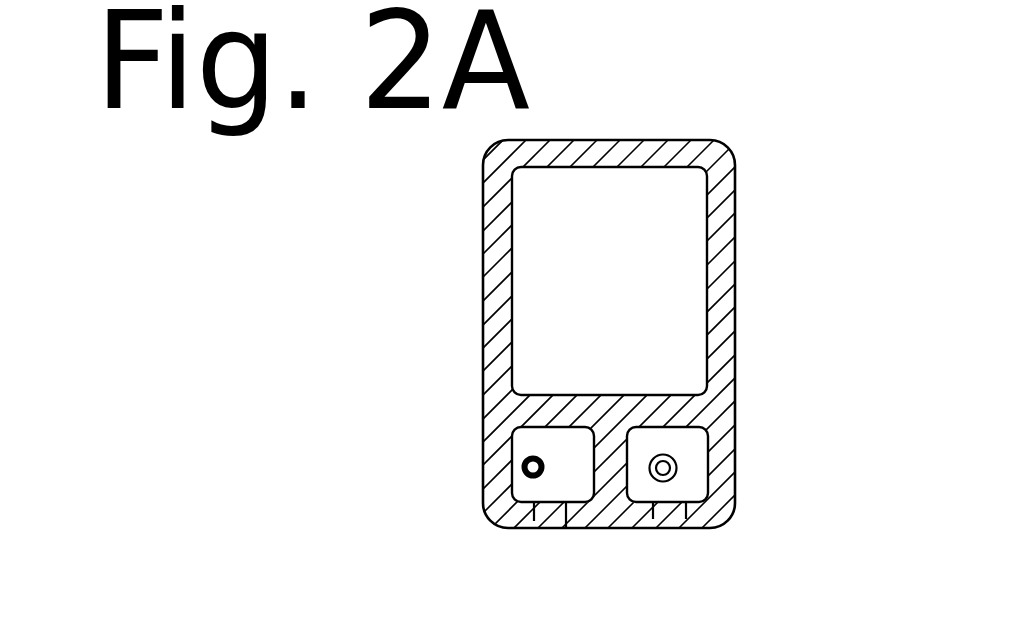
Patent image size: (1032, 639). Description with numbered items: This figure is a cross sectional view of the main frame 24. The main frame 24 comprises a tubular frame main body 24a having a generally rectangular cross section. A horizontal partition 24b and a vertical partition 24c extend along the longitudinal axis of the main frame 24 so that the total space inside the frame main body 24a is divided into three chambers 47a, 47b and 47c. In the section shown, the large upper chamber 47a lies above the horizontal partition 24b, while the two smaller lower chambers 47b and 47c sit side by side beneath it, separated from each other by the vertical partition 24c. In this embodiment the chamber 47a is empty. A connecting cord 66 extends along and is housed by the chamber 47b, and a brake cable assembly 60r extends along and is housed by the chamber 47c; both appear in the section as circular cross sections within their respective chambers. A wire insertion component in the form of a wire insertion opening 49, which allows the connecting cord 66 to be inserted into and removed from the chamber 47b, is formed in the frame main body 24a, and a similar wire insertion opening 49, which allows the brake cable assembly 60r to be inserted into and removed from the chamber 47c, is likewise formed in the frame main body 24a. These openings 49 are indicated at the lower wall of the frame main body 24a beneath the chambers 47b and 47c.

The main frame 24 is at (778, 251).
The frame main body 24a is at (735, 176).
The horizontal partition 24b is at (570, 406).
The vertical partition 24c is at (595, 440).
The chamber 47a is at (532, 305).
The chamber 47b is at (525, 489).
The chamber 47c is at (690, 480).
The wire insertion opening 49 is at (537, 530).
The connecting cord 66 is at (527, 461).
The brake cable assembly 60r is at (676, 459).